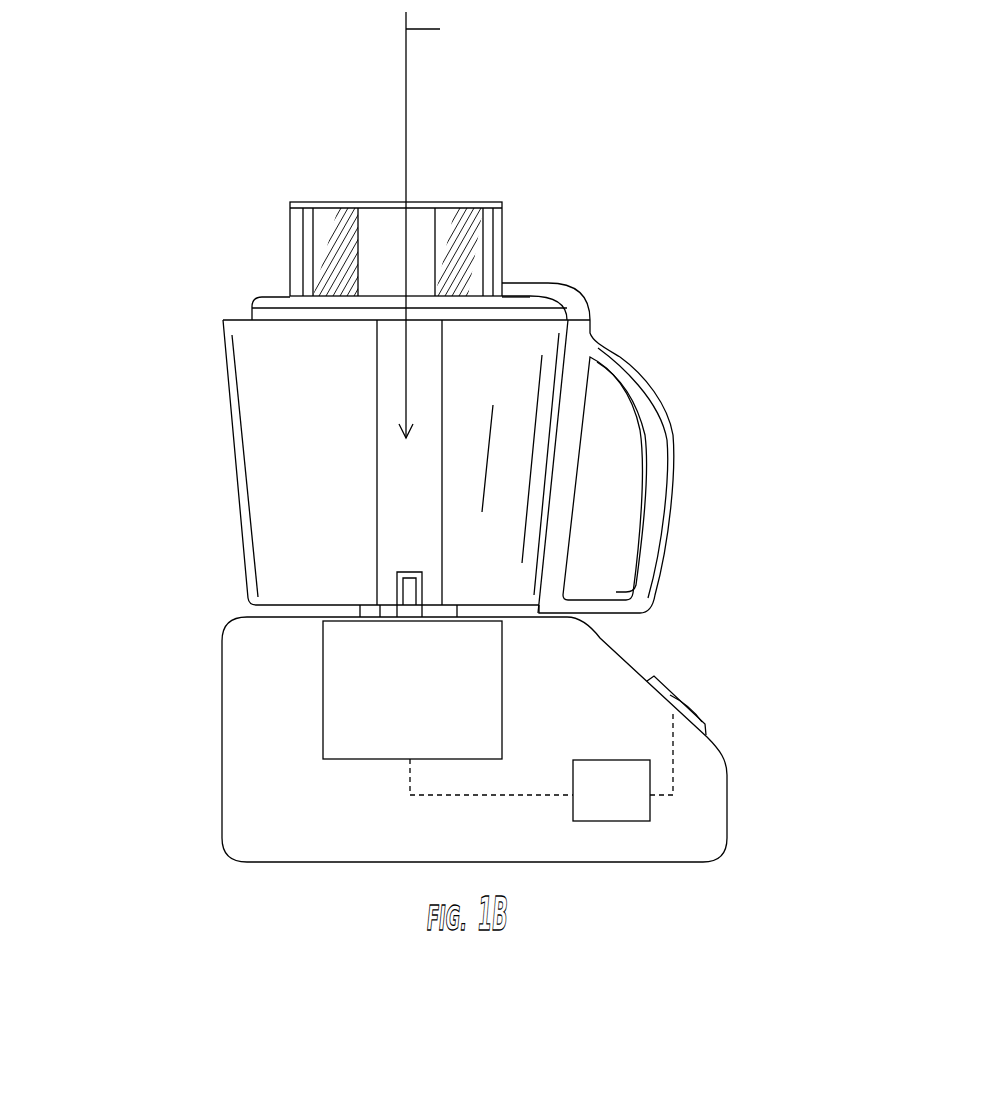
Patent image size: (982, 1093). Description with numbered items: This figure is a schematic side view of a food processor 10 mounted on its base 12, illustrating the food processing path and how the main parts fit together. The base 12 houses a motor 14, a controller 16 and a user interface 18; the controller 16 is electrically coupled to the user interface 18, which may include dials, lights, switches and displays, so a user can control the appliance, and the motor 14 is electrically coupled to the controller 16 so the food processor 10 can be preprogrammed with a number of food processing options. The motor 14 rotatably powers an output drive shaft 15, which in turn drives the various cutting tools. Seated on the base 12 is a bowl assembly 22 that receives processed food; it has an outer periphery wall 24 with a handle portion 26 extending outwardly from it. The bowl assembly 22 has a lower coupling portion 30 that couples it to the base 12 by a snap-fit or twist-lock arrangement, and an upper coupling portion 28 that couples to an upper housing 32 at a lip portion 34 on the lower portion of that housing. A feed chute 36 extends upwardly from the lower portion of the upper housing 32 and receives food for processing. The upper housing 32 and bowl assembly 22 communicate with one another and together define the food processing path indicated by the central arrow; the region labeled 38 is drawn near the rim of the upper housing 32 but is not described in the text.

The food processor 10 is at (610, 184).
The base 12 is at (212, 778).
The motor 14 is at (503, 673).
The output drive shaft 15 is at (410, 590).
The controller 16 is at (650, 812).
The user interface 18 is at (702, 720).
The bowl assembly 22 is at (224, 446).
The outer periphery wall 24 is at (247, 484).
The handle portion 26 is at (673, 422).
The upper coupling portion 28 is at (592, 332).
The lower coupling portion 30 is at (248, 603).
The upper housing 32 is at (259, 291).
The lip portion 34 is at (226, 311).
The feed chute 36 is at (502, 243).
The lid 38 is at (575, 293).